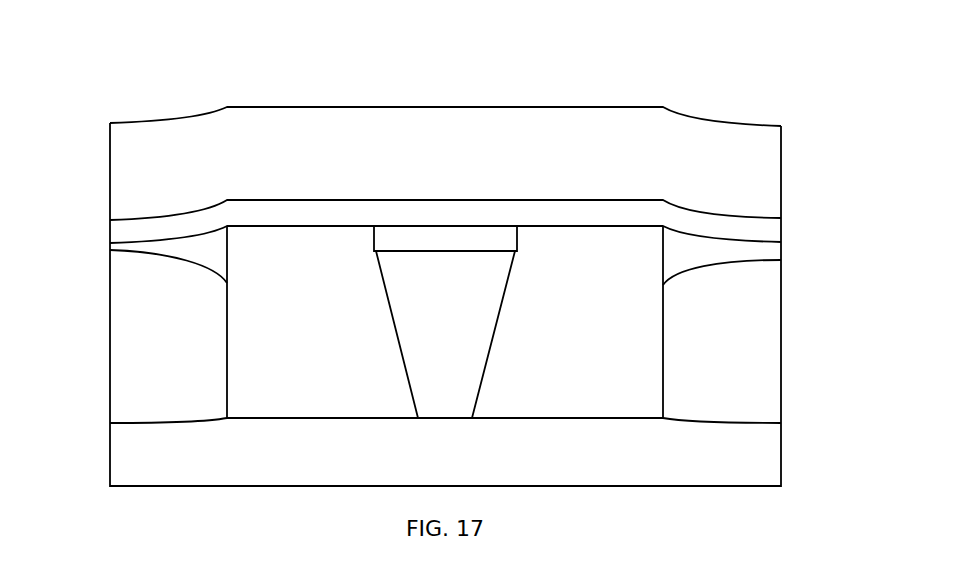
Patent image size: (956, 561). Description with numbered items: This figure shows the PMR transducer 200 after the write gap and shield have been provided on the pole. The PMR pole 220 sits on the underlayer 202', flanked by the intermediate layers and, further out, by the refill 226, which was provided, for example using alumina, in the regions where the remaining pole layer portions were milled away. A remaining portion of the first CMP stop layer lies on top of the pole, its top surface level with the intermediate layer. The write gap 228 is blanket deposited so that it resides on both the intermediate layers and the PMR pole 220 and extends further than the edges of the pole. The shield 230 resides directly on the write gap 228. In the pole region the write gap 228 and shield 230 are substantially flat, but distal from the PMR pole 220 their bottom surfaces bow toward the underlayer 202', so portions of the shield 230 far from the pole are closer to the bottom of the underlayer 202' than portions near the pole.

The PMR transducer 200 is at (423, 52).
The PMR pole 220 is at (513, 285).
The shield 230 is at (781, 178).
The write gap 228 is at (110, 232).
The refill 226 is at (110, 347).
The underlayer 202' is at (611, 427).